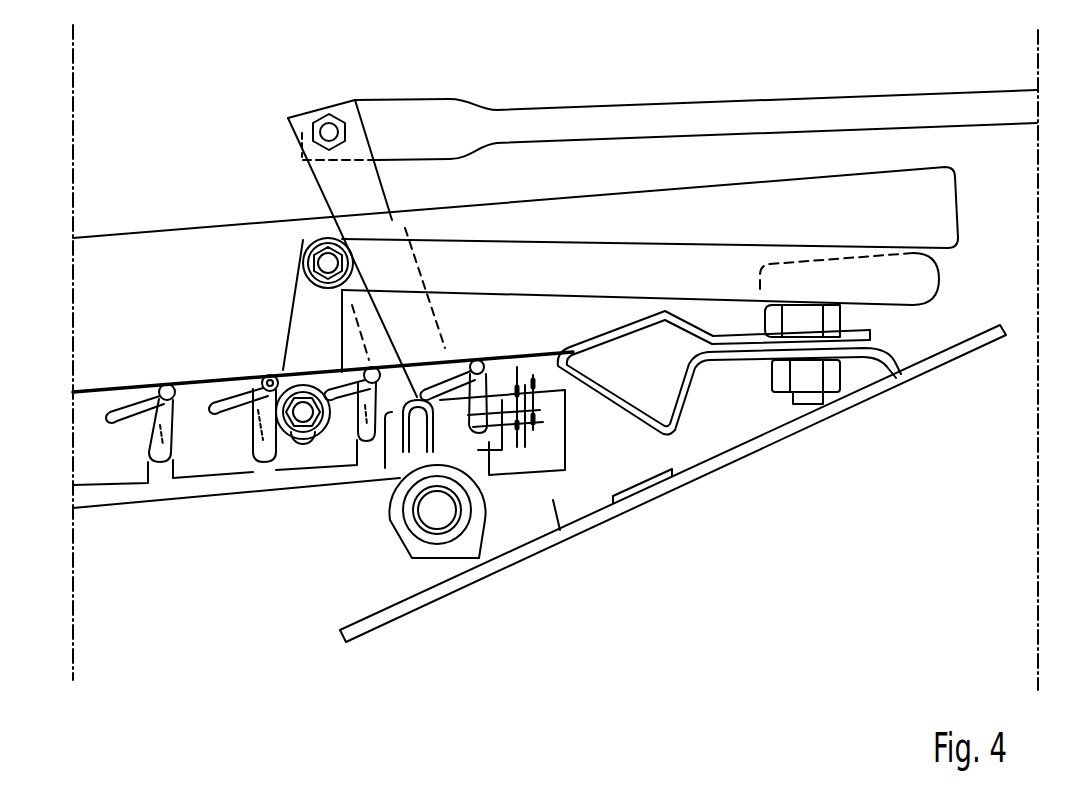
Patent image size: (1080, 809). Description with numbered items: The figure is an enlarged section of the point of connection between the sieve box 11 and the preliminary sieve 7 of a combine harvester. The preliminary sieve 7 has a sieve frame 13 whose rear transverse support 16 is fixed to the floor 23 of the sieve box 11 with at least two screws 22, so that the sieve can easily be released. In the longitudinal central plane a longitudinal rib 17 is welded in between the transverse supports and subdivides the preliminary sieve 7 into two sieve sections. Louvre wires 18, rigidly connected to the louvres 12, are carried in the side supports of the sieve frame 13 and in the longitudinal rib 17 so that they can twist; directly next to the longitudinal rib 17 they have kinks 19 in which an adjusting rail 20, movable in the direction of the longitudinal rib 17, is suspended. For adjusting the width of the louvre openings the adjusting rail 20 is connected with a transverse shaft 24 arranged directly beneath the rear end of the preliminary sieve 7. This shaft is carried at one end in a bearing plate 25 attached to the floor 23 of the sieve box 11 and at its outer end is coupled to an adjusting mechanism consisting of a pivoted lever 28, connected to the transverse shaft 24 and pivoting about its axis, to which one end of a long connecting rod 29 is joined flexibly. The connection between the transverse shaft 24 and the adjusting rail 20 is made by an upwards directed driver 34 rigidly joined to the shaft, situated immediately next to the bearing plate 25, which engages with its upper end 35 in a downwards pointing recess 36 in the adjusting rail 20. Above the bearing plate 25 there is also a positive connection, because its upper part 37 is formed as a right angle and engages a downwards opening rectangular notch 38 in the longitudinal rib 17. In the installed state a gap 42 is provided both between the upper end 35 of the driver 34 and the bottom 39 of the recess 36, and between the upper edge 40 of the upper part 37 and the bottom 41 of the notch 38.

The preliminary sieve 7 is at (195, 536).
The sieve box 11 is at (673, 502).
The louvres 12 is at (220, 372).
The sieve frame 13 is at (713, 542).
The rear transverse support 16 is at (615, 405).
The longitudinal rib 17 is at (157, 293).
The louvre wires 18 is at (283, 445).
The kinks 19 is at (268, 392).
The adjusting rail 20 is at (100, 452).
The screws 22 is at (835, 377).
The floor 23 is at (797, 432).
The transverse shaft 24 is at (447, 503).
The bearing plate 25 is at (468, 572).
The pivoted lever 28 is at (358, 207).
The connecting rod 29 is at (685, 122).
The driver 34 is at (667, 495).
The upper end 35 is at (433, 427).
The recess 36 is at (290, 192).
The upper part 37 is at (445, 502).
The notch 38 is at (460, 400).
The bottom 39 is at (341, 285).
The upper edge 40 is at (372, 443).
The bottom 41 is at (502, 244).
The gap 42 is at (533, 375).